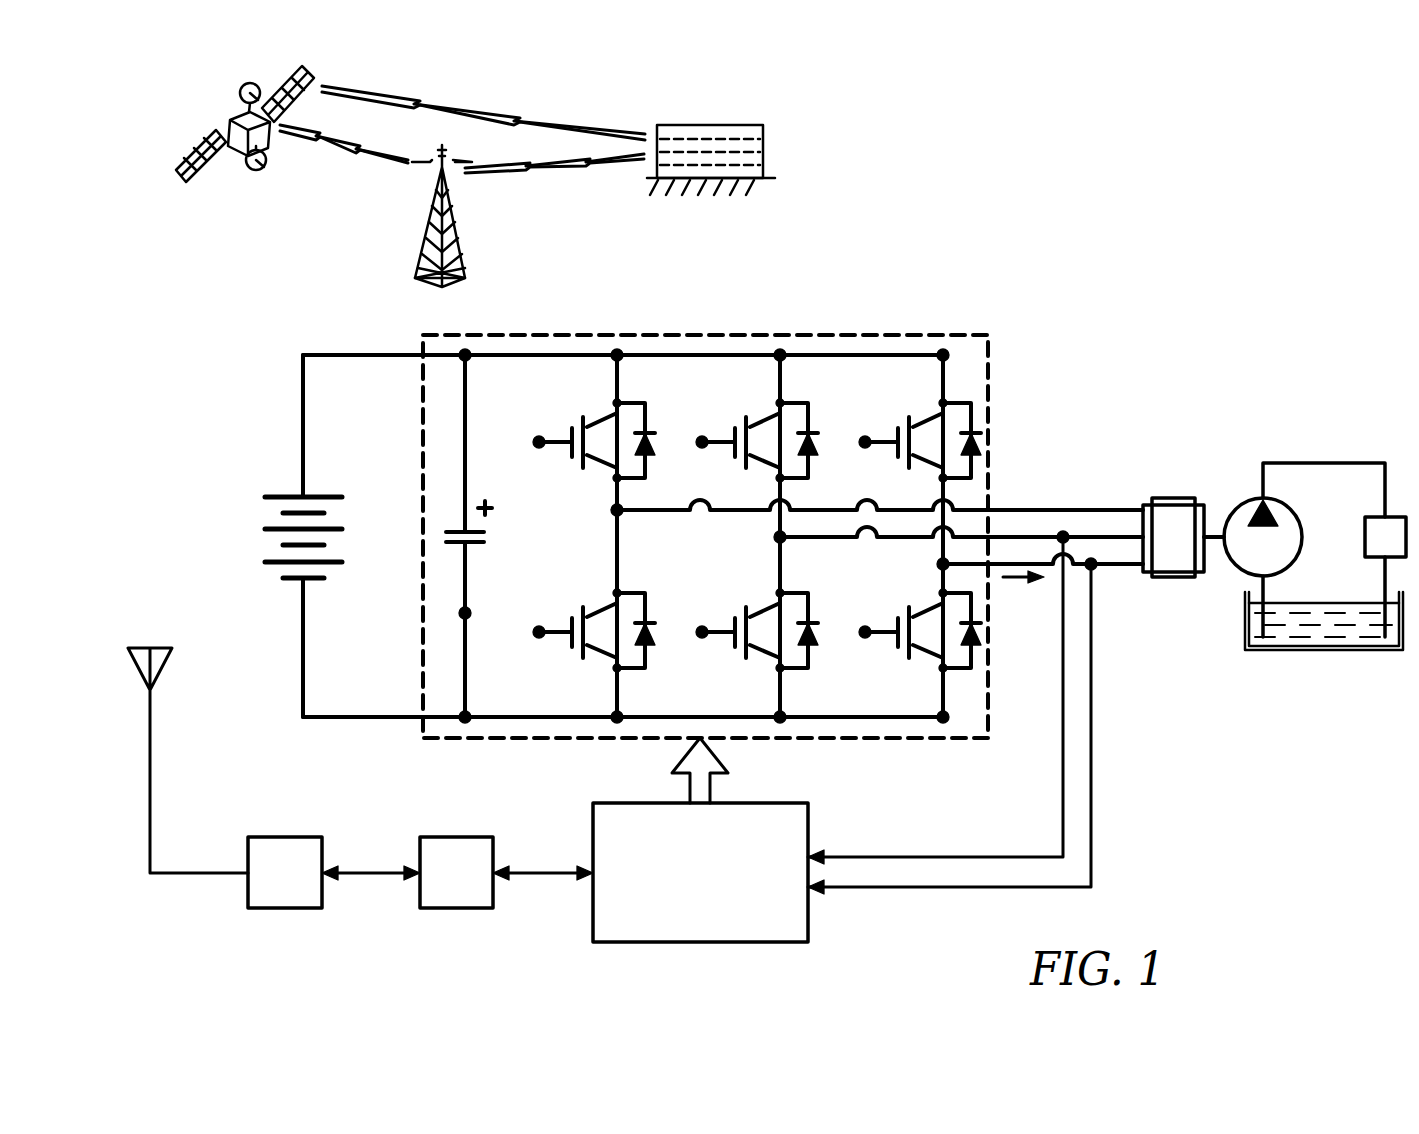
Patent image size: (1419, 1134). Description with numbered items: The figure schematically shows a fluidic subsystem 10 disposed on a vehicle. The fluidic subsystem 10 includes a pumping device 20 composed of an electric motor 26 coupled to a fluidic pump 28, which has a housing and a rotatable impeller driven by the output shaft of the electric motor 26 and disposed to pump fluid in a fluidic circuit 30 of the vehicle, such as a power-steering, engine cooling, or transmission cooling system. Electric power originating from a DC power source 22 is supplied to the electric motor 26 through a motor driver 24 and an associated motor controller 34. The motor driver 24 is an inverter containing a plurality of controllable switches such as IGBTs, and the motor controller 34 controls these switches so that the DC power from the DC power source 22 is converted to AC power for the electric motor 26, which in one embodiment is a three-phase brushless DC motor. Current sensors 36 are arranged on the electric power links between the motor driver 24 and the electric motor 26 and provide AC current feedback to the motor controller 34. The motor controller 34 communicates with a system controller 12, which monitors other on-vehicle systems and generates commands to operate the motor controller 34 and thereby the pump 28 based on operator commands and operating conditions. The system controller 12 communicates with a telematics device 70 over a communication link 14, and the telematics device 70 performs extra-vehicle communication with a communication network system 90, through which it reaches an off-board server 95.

The fluidic subsystem 10 is at (283, 340).
The system controller 12 is at (456, 872).
The communication link 14 is at (543, 870).
The pumping device 20 is at (1060, 418).
The DC power source 22 is at (278, 540).
The motor driver 24 is at (794, 536).
The electric motor 26 is at (1170, 497).
The fluidic pump 28 is at (1240, 568).
The fluidic circuit 30 is at (1325, 583).
The motor controller 34 is at (700, 840).
The current sensors 36 is at (1093, 558).
The telematics device 70 is at (274, 778).
The communication network system 90 is at (410, 176).
The off-board server 95 is at (780, 138).